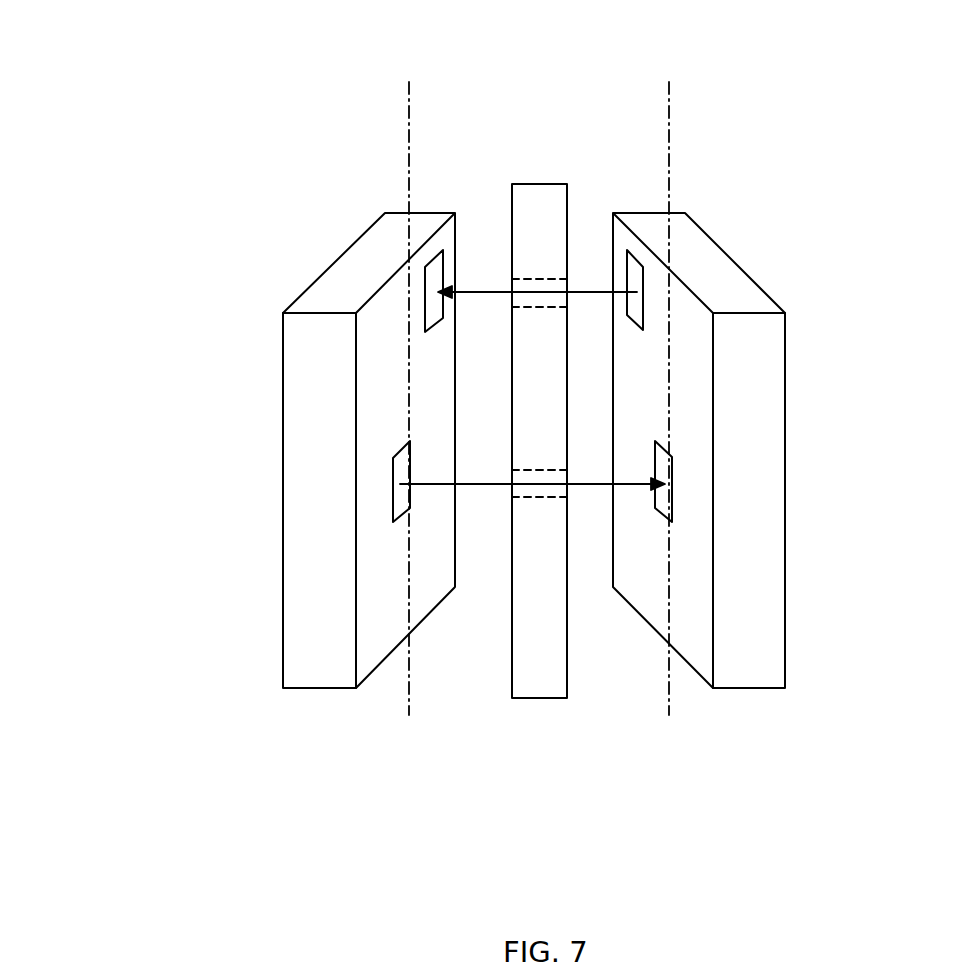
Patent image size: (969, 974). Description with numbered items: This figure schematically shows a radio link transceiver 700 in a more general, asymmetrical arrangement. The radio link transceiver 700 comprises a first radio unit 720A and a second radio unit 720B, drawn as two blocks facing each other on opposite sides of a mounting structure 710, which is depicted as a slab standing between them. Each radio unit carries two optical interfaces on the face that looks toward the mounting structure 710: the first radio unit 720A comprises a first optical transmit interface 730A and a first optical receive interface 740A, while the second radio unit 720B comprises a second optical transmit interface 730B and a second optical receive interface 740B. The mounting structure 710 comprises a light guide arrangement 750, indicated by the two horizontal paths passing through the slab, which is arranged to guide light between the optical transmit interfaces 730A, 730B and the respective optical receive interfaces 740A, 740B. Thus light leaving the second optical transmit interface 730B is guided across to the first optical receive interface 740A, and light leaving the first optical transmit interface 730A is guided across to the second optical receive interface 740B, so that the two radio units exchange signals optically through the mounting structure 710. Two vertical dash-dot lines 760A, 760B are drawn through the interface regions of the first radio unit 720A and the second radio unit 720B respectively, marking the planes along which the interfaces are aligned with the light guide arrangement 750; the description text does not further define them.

The radio link transceiver 700 is at (138, 62).
The mounting structure 710 is at (545, 200).
The first radio unit 720A is at (310, 483).
The second radio unit 720B is at (637, 588).
The first optical transmit interface 730A is at (410, 508).
The second optical transmit interface 730B is at (632, 270).
The first optical receive interface 740A is at (436, 285).
The second optical receive interface 740B is at (672, 508).
The light guide arrangement 750 is at (522, 303).
The first axis 760A is at (408, 92).
The second axis 760B is at (663, 86).